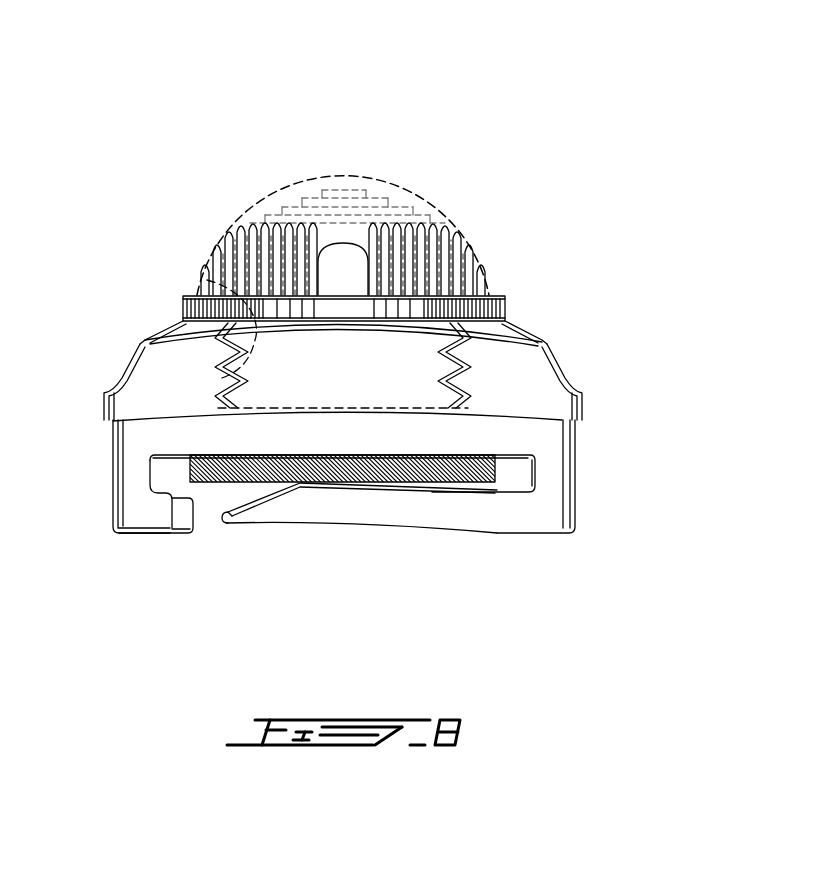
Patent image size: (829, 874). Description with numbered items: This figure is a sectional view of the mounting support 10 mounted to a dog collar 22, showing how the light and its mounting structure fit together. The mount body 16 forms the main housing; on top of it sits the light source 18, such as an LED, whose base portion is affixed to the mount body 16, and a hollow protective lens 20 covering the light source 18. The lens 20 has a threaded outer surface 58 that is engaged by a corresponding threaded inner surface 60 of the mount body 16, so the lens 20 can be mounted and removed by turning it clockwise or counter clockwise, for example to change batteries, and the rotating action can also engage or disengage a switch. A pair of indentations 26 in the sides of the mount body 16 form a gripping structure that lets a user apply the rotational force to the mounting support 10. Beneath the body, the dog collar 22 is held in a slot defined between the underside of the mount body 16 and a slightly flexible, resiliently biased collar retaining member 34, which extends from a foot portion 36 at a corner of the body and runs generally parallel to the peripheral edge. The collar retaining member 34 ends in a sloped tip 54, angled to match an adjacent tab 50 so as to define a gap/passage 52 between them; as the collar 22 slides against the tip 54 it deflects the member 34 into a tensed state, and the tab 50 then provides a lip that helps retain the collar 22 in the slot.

The mounting support 10 is at (165, 146).
The mount body 16 is at (503, 340).
The light source 18 is at (348, 240).
The lens 20 is at (457, 207).
The dog collar 22 is at (330, 462).
The indentations 26 is at (130, 376).
The collar retaining members 34 is at (375, 500).
The foot portion 36 is at (118, 465).
The tabs 50 is at (167, 515).
The gap/passage 52 is at (207, 518).
The tip 54 is at (231, 518).
The threaded outer surface 58 is at (207, 283).
The threaded inner surface 60 is at (218, 379).